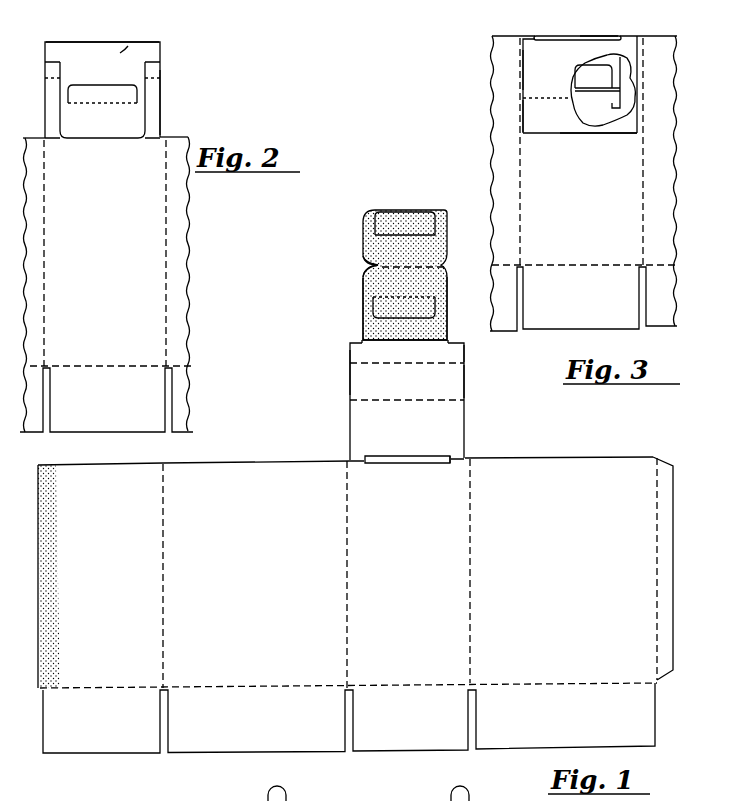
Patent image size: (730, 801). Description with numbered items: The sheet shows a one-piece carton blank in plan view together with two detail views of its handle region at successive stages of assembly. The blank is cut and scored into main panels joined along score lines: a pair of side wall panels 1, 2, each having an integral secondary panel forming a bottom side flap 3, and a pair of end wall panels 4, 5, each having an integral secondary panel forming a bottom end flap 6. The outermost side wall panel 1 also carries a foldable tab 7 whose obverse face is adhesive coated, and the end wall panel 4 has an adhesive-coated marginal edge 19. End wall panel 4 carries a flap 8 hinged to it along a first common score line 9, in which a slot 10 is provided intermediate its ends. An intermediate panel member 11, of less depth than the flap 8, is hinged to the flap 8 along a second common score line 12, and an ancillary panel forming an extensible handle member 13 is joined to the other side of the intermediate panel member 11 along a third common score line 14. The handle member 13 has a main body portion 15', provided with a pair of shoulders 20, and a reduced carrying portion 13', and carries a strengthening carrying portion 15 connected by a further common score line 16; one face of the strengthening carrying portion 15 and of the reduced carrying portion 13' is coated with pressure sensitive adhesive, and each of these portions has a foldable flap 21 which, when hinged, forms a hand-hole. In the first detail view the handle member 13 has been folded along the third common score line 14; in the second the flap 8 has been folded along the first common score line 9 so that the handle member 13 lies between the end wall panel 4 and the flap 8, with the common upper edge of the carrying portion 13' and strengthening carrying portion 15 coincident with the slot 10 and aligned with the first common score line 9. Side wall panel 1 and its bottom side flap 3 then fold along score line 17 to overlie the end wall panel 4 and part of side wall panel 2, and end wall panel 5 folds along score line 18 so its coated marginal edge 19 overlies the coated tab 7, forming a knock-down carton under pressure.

In FIG. 2, the side wall panel 1 is at (185, 225).
In FIG. 3, the side wall panel 1 is at (670, 172).
In FIG. 1, the side wall panel 1 is at (576, 580).
In FIG. 2, the side wall panel 2 is at (28, 259).
In FIG. 3, the side wall panel 2 is at (496, 148).
In FIG. 1, the side wall panel 2 is at (254, 589).
In FIG. 2, the bottom side flap 3 is at (190, 393).
In FIG. 3, the bottom side flap 3 is at (659, 325).
In FIG. 1, the bottom side flap 3 is at (552, 746).
In FIG. 2, the end wall panel 4 is at (106, 265).
In FIG. 3, the end wall panel 4 is at (581, 219).
In FIG. 1, the end wall panel 4 is at (416, 584).
In FIG. 1, the end wall panel 5 is at (101, 590).
In FIG. 2, the bottom end flap 6 is at (110, 373).
In FIG. 3, the bottom end flap 6 is at (573, 328).
In FIG. 1, the bottom end flap 6 is at (425, 750).
In FIG. 1, the foldable tab 7 is at (668, 503).
In FIG. 2, the flap 8 is at (156, 105).
In FIG. 3, the flap 8 is at (526, 63).
In FIG. 1, the flap 8 is at (352, 431).
In FIG. 2, the first common score line 9 is at (151, 138).
In FIG. 1, the first common score line 9 is at (455, 462).
In FIG. 2, the slot 10 is at (113, 138).
In FIG. 3, the slot 10 is at (560, 40).
In FIG. 1, the slot 10 is at (405, 463).
In FIG. 3, the intermediate panel member 11 is at (526, 117).
In FIG. 1, the intermediate panel member 11 is at (460, 381).
In FIG. 2, the second common score line 12 is at (151, 77).
In FIG. 3, the second common score line 12 is at (530, 98).
In FIG. 1, the second common score line 12 is at (427, 400).
In FIG. 2, the handle member 13 is at (114, 86).
In FIG. 3, the handle member 13 is at (580, 84).
In FIG. 1, the handle member 13 is at (335, 372).
In FIG. 2, the reduced carrying portion 13' is at (82, 100).
In FIG. 1, the reduced carrying portion 13' is at (391, 308).
In FIG. 2, the third common score line 14 is at (84, 42).
In FIG. 3, the third common score line 14 is at (597, 133).
In FIG. 1, the third common score line 14 is at (427, 363).
In FIG. 3, the strengthening carrying portion 15 is at (600, 25).
In FIG. 1, the strengthening carrying portion 15 is at (392, 275).
In FIG. 2, the main body portion 15' is at (138, 36).
In FIG. 3, the main body portion 15' is at (586, 107).
In FIG. 1, the main body portion 15' is at (482, 354).
In FIG. 1, the further common score line 16 is at (378, 264).
In FIG. 2, the score line 17 is at (166, 208).
In FIG. 3, the score line 17 is at (643, 172).
In FIG. 1, the score line 17 is at (470, 509).
In FIG. 1, the score line 18 is at (163, 513).
In FIG. 1, the marginal edge 19 is at (53, 537).
In FIG. 2, the shoulders 20 is at (44, 64).
In FIG. 3, the shoulders 20 is at (628, 104).
In FIG. 1, the shoulders 20 is at (451, 343).
In FIG. 2, the foldable flap 21 is at (88, 90).
In FIG. 3, the foldable flap 21 is at (597, 78).
In FIG. 1, the foldable flap 21 is at (378, 228).